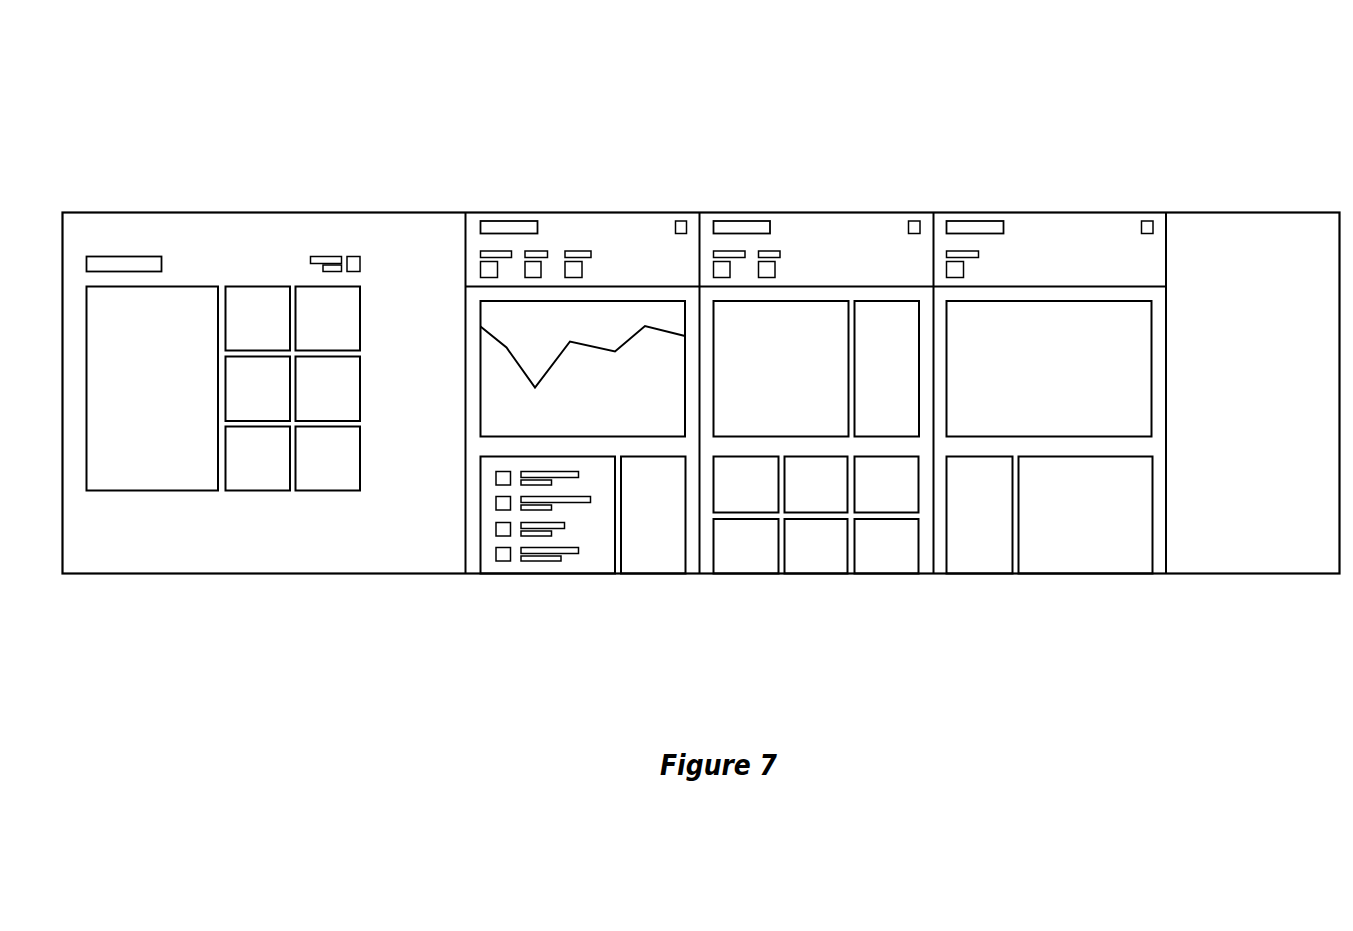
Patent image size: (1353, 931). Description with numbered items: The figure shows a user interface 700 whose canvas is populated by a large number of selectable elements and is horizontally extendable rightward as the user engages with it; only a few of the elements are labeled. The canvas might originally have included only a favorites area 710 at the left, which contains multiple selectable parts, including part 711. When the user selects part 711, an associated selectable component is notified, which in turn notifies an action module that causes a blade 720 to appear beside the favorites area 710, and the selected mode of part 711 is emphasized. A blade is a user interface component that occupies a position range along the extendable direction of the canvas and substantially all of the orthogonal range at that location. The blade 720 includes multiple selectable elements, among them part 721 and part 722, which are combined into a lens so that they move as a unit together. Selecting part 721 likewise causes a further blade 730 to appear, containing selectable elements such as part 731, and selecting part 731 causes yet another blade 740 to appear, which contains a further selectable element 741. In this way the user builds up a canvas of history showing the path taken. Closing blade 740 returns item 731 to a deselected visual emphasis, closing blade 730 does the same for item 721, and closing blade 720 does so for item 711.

The user interface 700 is at (735, 40).
The favorites area 710 is at (468, 593).
The part 711 is at (343, 468).
The blade 720 is at (699, 593).
The part 721 is at (667, 520).
The part 722 is at (607, 534).
The blade 730 is at (933, 593).
The part 731 is at (795, 372).
The blade 740 is at (1166, 593).
The content area of fourth panel 741 is at (1099, 525).